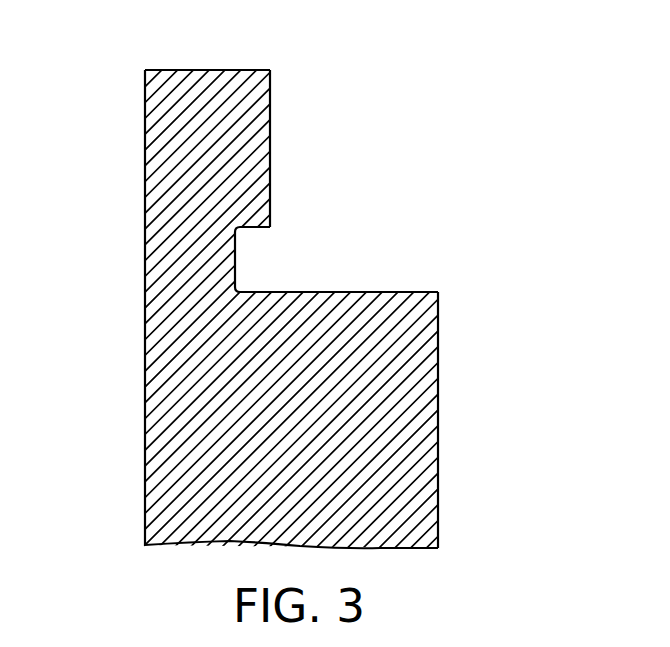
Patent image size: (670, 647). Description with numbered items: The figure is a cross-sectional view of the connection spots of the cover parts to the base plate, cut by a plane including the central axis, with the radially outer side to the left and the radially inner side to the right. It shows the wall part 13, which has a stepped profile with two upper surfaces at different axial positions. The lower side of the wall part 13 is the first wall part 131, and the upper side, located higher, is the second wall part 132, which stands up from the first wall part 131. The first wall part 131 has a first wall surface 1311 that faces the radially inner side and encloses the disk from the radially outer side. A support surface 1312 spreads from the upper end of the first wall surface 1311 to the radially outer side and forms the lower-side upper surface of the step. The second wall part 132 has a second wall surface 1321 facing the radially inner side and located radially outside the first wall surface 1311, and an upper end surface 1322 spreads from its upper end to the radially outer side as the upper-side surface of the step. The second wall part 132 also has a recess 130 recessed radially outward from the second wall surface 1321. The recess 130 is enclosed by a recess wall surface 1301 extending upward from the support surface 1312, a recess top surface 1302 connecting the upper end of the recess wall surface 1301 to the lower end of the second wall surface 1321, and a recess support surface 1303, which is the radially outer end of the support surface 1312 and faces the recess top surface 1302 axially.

The wall part 13 is at (60, 138).
The first wall part 131 is at (143, 452).
The second wall part 132 is at (143, 155).
The recess 130 is at (488, 182).
The recess wall surface 1301 is at (236, 262).
The recess top surface 1302 is at (251, 230).
The recess support surface 1303 is at (254, 292).
The first wall surface 1311 is at (439, 353).
The support surface 1312 is at (423, 292).
The second wall surface 1321 is at (270, 105).
The upper end surface 1322 is at (211, 70).